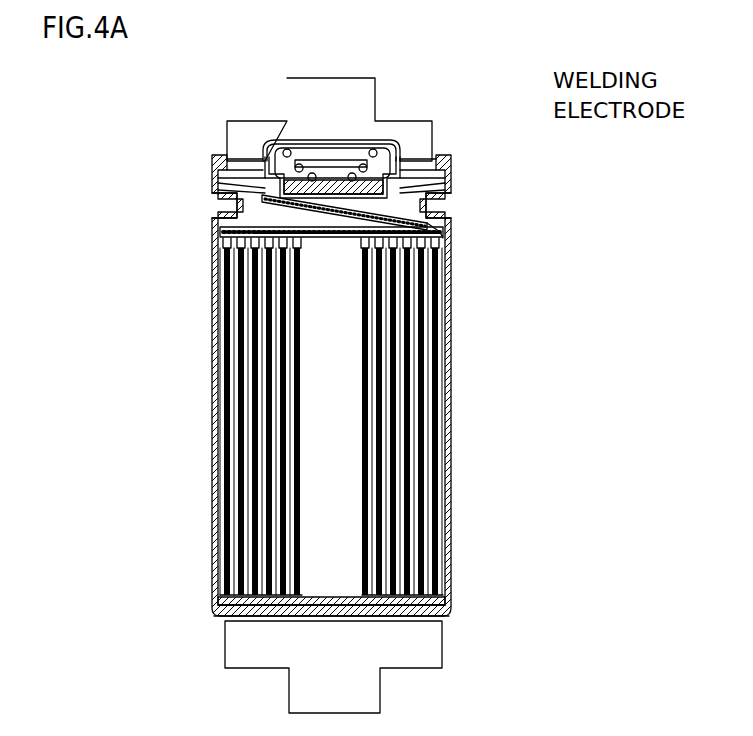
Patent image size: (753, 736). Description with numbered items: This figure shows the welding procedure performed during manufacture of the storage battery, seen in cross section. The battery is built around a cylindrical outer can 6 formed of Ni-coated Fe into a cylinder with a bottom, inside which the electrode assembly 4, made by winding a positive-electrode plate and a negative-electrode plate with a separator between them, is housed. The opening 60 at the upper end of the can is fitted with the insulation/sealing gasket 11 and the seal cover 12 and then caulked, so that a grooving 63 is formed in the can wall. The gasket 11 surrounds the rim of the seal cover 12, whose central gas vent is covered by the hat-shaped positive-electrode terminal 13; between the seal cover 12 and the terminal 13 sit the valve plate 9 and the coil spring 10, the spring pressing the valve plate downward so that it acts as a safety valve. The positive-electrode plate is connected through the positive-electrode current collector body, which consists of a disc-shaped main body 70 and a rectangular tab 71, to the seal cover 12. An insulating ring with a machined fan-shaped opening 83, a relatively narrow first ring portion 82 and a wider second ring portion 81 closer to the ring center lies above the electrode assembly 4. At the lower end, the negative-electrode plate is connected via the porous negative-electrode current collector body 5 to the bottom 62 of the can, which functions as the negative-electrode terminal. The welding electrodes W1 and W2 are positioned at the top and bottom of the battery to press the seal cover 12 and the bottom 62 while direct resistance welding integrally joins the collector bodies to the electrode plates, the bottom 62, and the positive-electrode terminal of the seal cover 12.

The welding electrode W1 is at (382, 109).
The welding electrode W2 is at (387, 641).
The electrode assembly 4 is at (447, 392).
The negative-electrode current collector body 5 is at (450, 600).
The cylindrical outer can 6 is at (341, 330).
The valve plate 9 is at (275, 185).
The coil spring 10 is at (297, 145).
The insulation/sealing gasket 11 is at (442, 148).
The seal cover 12 is at (223, 158).
The positive-electrode terminal 13 is at (285, 145).
The opening 60 is at (342, 115).
The bottom 62 is at (452, 613).
The grooving 63 is at (430, 205).
The disc-shaped main body 70 is at (290, 408).
The rectangular tab 71 is at (350, 238).
The second ring portion 81 is at (212, 223).
The first ring portion 82 is at (445, 230).
The fan-shaped opening 83 is at (250, 240).